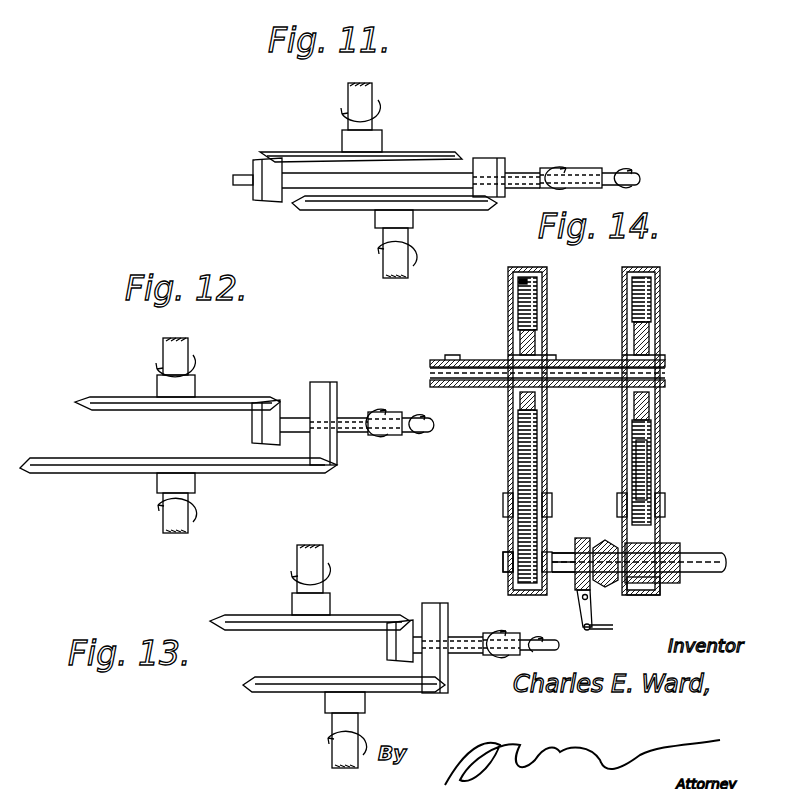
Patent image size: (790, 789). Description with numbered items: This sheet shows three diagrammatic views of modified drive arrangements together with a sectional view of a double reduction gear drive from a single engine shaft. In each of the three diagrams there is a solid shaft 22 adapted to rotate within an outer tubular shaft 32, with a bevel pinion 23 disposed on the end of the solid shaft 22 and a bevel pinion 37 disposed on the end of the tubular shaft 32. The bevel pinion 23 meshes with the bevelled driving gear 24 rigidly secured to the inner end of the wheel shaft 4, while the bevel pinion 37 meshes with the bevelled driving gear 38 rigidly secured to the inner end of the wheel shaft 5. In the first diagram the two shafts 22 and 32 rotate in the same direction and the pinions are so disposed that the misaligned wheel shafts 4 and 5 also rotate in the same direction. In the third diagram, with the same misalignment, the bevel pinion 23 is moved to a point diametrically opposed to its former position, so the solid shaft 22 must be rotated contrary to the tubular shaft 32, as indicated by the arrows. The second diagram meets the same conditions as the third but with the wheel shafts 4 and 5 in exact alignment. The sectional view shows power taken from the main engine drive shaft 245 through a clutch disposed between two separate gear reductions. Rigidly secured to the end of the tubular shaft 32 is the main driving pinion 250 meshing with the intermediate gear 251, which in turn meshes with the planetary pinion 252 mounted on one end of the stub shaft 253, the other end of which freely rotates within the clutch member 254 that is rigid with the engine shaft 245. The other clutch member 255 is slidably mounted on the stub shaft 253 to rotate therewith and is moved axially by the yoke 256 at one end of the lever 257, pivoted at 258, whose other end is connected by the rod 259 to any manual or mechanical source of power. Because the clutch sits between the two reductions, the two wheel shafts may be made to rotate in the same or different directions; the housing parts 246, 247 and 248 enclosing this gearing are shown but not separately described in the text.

In FIG. 11, the driving shaft 4 is at (360, 90).
In FIG. 12, the driving shaft 4 is at (180, 347).
In FIG. 13, the driving shaft 4 is at (312, 553).
In FIG. 11, the driving shaft 5 is at (393, 258).
In FIG. 12, the driving shaft 5 is at (170, 520).
In FIG. 13, the driving shaft 5 is at (333, 755).
In FIG. 11, the solid shaft 22 is at (634, 176).
In FIG. 12, the solid shaft 22 is at (425, 430).
In FIG. 13, the solid shaft 22 is at (549, 651).
In FIG. 14, the solid shaft 22 is at (660, 368).
In FIG. 11, the bevel pinion 23 is at (262, 195).
In FIG. 12, the bevel pinion 23 is at (258, 432).
In FIG. 13, the bevel pinion 23 is at (395, 643).
In FIG. 11, the bevelled driving gear 24 is at (422, 152).
In FIG. 12, the bevelled driving gear 24 is at (108, 397).
In FIG. 13, the bevelled driving gear 24 is at (248, 618).
In FIG. 11, the tubular shaft 32 is at (590, 170).
In FIG. 12, the tubular shaft 32 is at (395, 418).
In FIG. 13, the tubular shaft 32 is at (475, 652).
In FIG. 14, the tubular shaft 32 is at (450, 357).
In FIG. 11, the bevel pinion 37 is at (487, 163).
In FIG. 12, the bevel pinion 37 is at (320, 386).
In FIG. 13, the bevel pinion 37 is at (430, 614).
In FIG. 11, the bevelled driving gear 38 is at (455, 207).
In FIG. 12, the bevelled driving gear 38 is at (100, 462).
In FIG. 13, the bevelled driving gear 38 is at (280, 692).
In FIG. 14, the main engine drive shaft 245 is at (702, 558).
In FIG. 14, the bearing block 246 is at (650, 593).
In FIG. 14, the gear 247 is at (640, 485).
In FIG. 14, the housing 248 is at (650, 447).
In FIG. 14, the main driving pinion 250 is at (528, 283).
In FIG. 14, the intermediate gear 251 is at (535, 478).
In FIG. 14, the planetary pinion 252 is at (505, 565).
In FIG. 14, the stub shaft 253 is at (560, 568).
In FIG. 14, the clutch member 254 is at (615, 540).
In FIG. 14, the clutch member 255 is at (603, 545).
In FIG. 14, the yoke 256 is at (585, 545).
In FIG. 14, the lever 257 is at (588, 613).
In FIG. 14, the pivot 258 is at (590, 597).
In FIG. 14, the rod 259 is at (600, 630).